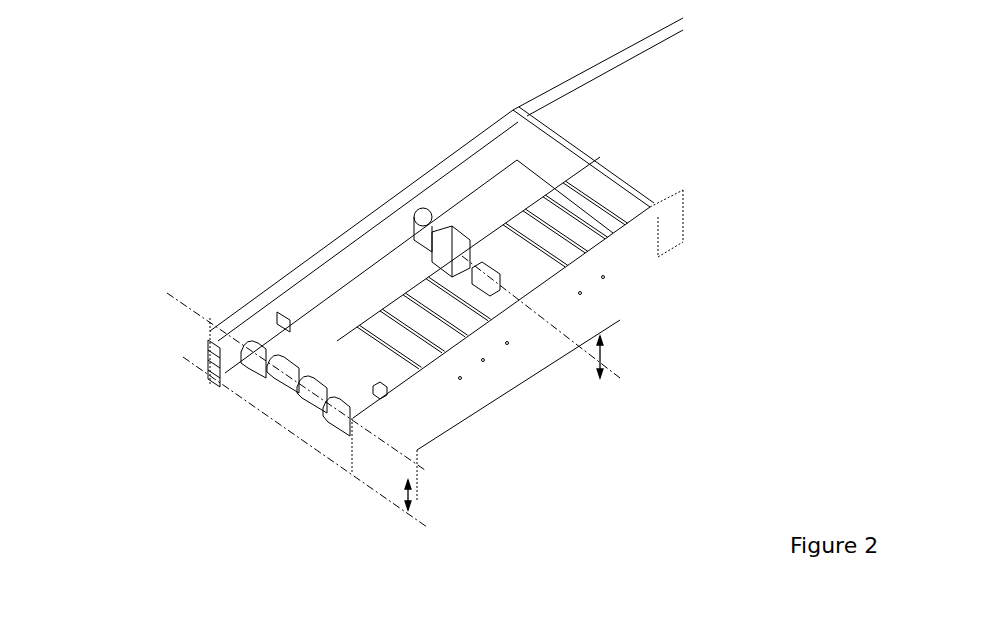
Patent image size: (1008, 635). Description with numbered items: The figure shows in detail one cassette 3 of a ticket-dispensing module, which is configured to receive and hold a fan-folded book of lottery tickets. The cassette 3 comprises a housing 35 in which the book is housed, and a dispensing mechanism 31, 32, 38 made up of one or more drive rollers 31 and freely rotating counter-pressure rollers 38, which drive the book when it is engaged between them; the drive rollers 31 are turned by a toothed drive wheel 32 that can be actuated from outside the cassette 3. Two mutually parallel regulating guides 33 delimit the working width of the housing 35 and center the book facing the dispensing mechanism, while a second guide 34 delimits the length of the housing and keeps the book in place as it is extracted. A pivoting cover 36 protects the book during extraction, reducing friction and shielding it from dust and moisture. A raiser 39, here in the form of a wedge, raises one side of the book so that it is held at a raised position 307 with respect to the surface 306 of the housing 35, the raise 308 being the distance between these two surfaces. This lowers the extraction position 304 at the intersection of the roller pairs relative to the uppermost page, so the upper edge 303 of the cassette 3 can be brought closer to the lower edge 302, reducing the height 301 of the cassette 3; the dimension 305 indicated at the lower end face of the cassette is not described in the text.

The cassette 3 is at (394, 290).
The drive roller 31 is at (298, 407).
The toothed drive wheel 32 is at (210, 357).
The first regulating guide 33 is at (430, 233).
The second guide 34 is at (500, 268).
The housing 35 is at (388, 293).
The cover 36 is at (600, 128).
The counter-pressure roller 38 is at (300, 383).
The raiser 39 is at (443, 250).
The height of the cassette 301 is at (180, 352).
The lower edge 302 is at (378, 494).
The upper edge 303 is at (410, 458).
The extraction position 304 is at (418, 478).
The flange height 305 is at (412, 498).
The surface of the housing 306 is at (573, 348).
The raised position 307 is at (565, 335).
The raise 308 is at (600, 360).